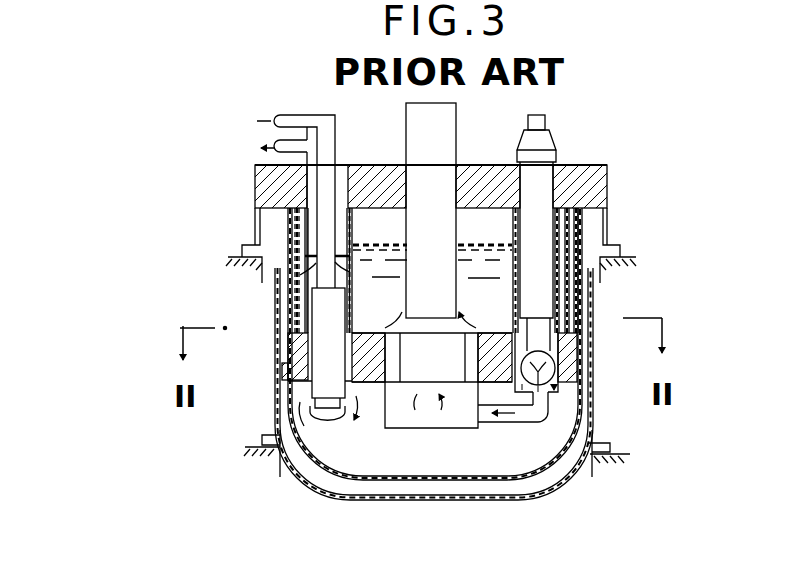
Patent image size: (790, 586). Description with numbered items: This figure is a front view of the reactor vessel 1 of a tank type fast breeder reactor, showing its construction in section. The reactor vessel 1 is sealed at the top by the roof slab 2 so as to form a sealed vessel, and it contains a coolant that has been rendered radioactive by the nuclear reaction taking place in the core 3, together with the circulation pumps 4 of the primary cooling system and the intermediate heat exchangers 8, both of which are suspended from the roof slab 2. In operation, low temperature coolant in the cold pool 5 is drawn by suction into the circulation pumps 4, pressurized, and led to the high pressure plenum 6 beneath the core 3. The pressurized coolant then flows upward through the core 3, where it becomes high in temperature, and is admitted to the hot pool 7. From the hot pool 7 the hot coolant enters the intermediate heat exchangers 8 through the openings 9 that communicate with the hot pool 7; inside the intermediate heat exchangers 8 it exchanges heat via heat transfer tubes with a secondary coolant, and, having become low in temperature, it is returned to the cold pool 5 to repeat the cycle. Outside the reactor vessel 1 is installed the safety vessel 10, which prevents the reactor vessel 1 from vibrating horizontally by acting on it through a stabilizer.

The reactor vessel 1 is at (292, 316).
The roof slab 2 is at (255, 180).
The core 3 is at (447, 362).
The circulation pump 4 is at (545, 146).
The cold pool 5 is at (403, 468).
The high pressure plenum 6 is at (388, 420).
The hot pool 7 is at (483, 265).
The intermediate heat exchanger 8 is at (320, 354).
The opening 9 is at (352, 265).
The safety vessel 10 is at (589, 336).